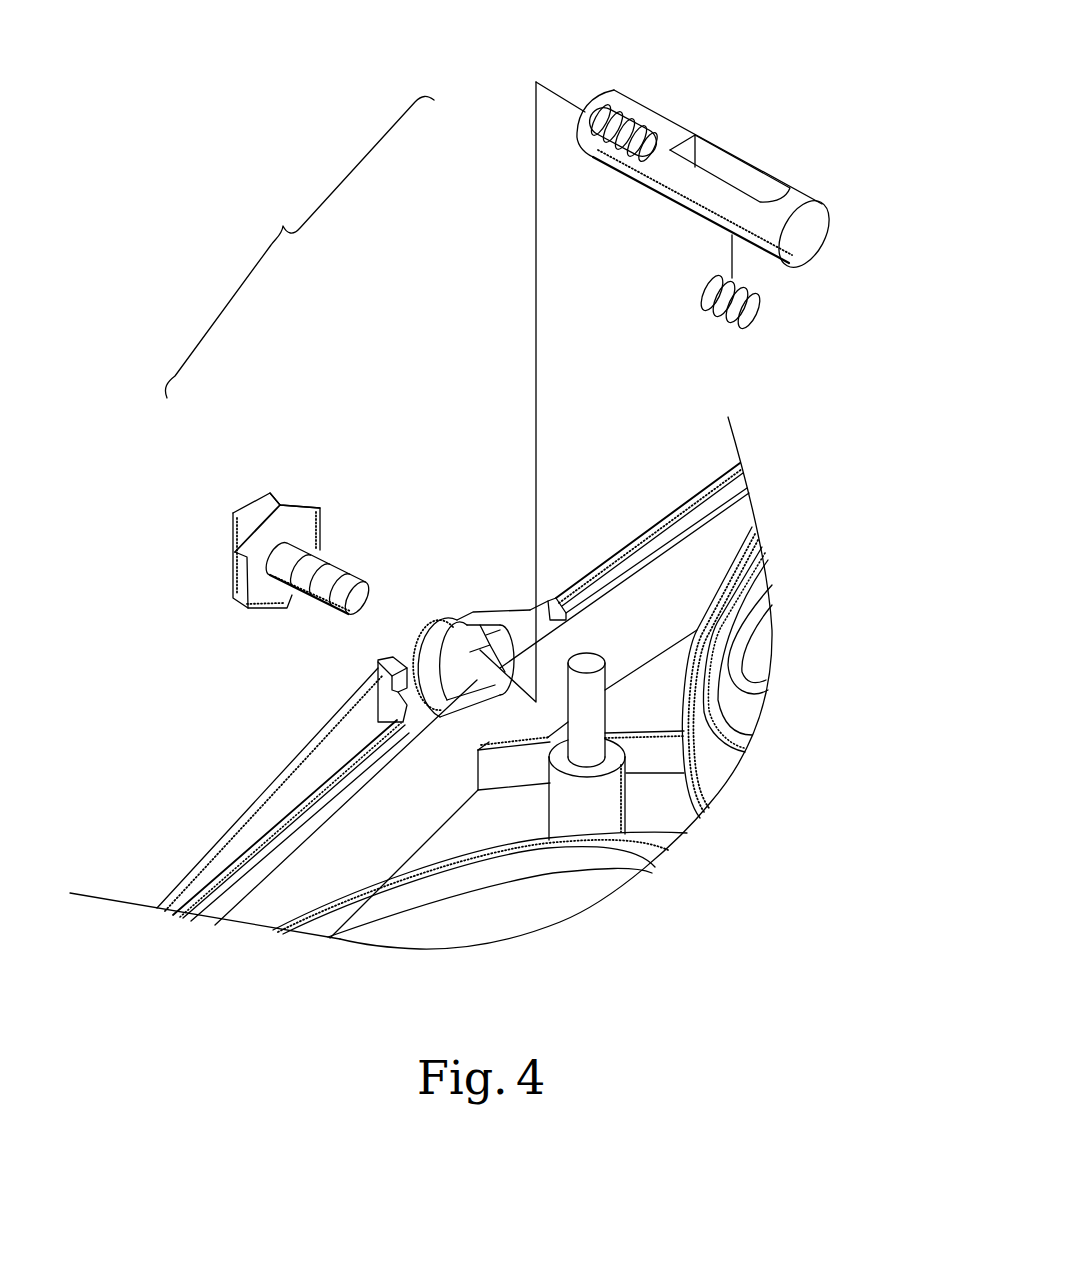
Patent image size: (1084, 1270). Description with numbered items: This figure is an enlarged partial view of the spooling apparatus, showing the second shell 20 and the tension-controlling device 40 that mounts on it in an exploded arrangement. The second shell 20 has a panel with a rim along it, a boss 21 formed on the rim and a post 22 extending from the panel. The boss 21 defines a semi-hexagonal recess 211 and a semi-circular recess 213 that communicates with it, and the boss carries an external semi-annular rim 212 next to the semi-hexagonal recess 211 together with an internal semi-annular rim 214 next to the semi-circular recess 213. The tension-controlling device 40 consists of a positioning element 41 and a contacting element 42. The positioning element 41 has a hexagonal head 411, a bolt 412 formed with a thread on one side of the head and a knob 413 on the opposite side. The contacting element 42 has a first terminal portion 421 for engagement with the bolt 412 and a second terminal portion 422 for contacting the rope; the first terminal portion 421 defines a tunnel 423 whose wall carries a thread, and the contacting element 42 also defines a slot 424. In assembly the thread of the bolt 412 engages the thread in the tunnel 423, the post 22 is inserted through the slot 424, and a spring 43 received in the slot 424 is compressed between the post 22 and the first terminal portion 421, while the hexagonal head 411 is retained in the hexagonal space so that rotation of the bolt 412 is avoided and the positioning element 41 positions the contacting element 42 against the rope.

The second shell 20 is at (239, 827).
The boss 21 is at (517, 623).
The semi-hexagonal recess 211 is at (460, 653).
The external semi-annular rim 212 is at (427, 638).
The semi-circular recess 213 is at (493, 627).
The internal semi-annular rim 214 is at (500, 684).
The post 22 is at (590, 660).
The tension-controlling device 40 is at (299, 247).
The positioning element 41 is at (238, 497).
The hexagonal head 411 is at (303, 506).
The bolt 412 is at (270, 566).
The knob 413 is at (233, 524).
The contacting element 42 is at (563, 133).
The first terminal portion 421 is at (607, 100).
The second terminal portion 422 is at (818, 222).
The tunnel 423 is at (632, 122).
The slot 424 is at (740, 172).
The spring 43 is at (705, 292).